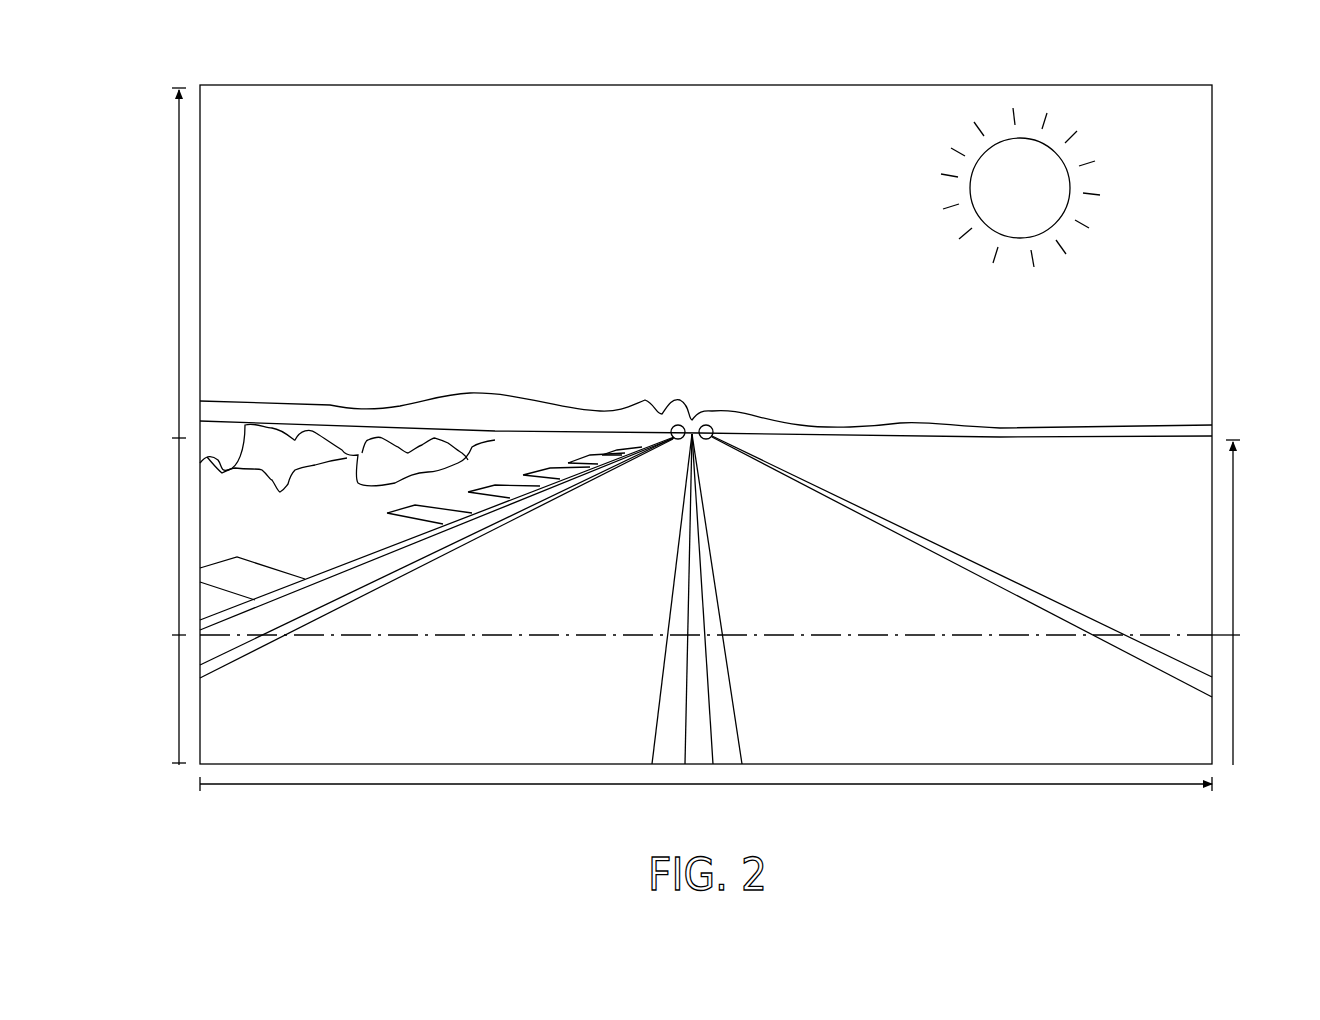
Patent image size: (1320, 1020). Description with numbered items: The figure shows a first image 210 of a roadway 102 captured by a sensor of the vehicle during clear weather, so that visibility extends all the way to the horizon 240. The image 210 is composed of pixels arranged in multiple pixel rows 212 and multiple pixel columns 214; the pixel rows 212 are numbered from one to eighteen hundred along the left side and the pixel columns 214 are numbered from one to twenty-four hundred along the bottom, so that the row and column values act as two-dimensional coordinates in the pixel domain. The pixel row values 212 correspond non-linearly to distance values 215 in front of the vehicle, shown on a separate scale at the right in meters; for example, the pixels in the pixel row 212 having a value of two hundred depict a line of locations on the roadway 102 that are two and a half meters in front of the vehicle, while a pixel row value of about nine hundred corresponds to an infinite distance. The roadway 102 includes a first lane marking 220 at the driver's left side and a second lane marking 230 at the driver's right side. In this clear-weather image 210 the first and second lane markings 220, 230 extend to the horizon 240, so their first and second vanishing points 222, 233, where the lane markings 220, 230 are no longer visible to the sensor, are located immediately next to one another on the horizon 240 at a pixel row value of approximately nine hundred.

The roadway 102 is at (580, 568).
The first image 210 is at (388, 78).
The pixel rows 212 is at (179, 297).
The pixel columns 214 is at (870, 786).
The distance values 215 is at (1233, 517).
The first lane marking 220 is at (373, 588).
The first vanishing point 222 is at (677, 424).
The second lane marking 230 is at (960, 562).
The second vanishing point 233 is at (707, 424).
The horizon 240 is at (460, 430).